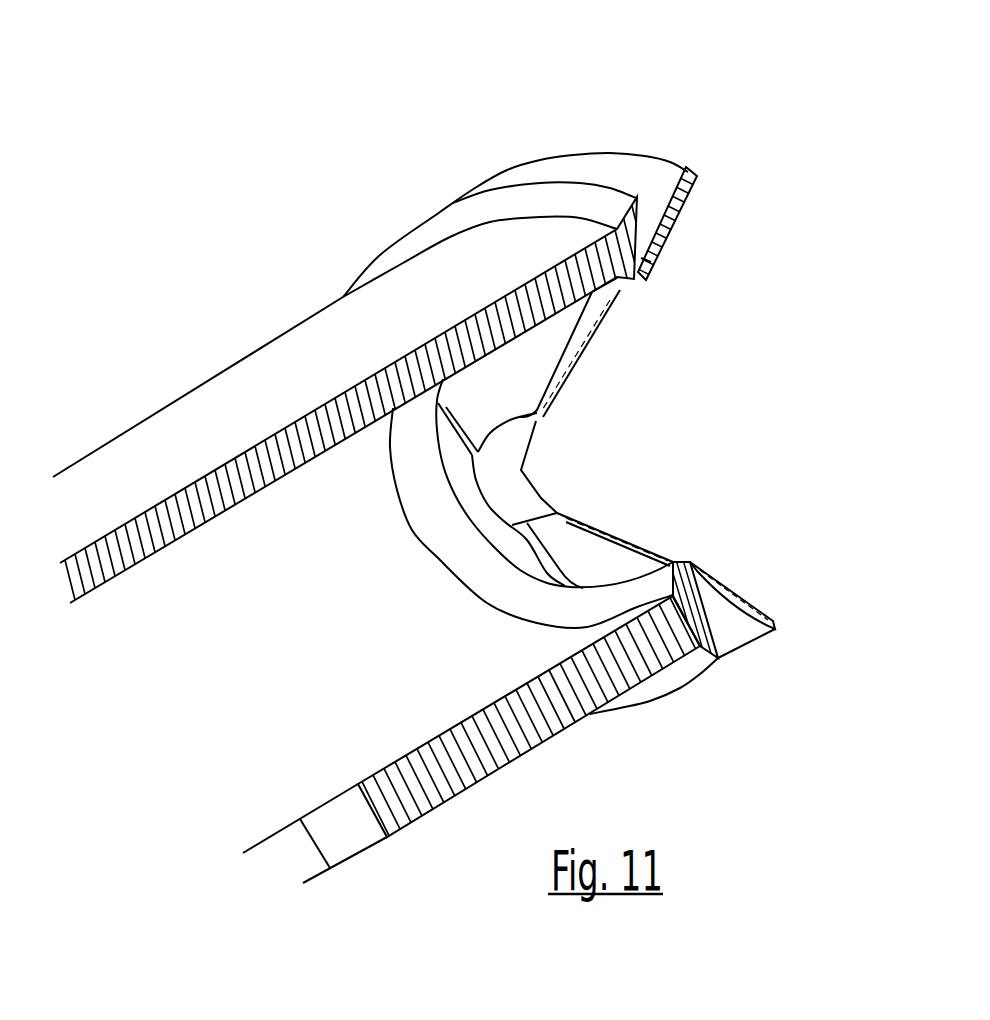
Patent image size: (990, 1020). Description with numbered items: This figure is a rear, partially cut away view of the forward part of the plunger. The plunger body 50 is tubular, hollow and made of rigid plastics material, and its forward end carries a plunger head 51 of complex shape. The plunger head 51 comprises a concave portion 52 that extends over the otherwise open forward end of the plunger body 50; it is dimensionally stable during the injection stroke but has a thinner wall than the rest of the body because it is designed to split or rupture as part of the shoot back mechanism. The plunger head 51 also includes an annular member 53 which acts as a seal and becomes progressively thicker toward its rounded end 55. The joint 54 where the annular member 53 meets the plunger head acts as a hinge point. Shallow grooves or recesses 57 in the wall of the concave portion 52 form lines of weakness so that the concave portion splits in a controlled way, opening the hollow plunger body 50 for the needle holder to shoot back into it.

The plunger body 50 is at (180, 372).
The plunger head 51 is at (503, 153).
The concave portion 52 is at (600, 557).
The annular member 53 is at (652, 151).
The joint 54 is at (650, 268).
The rounded end 55 is at (696, 166).
The grooves or recesses 57 is at (443, 417).